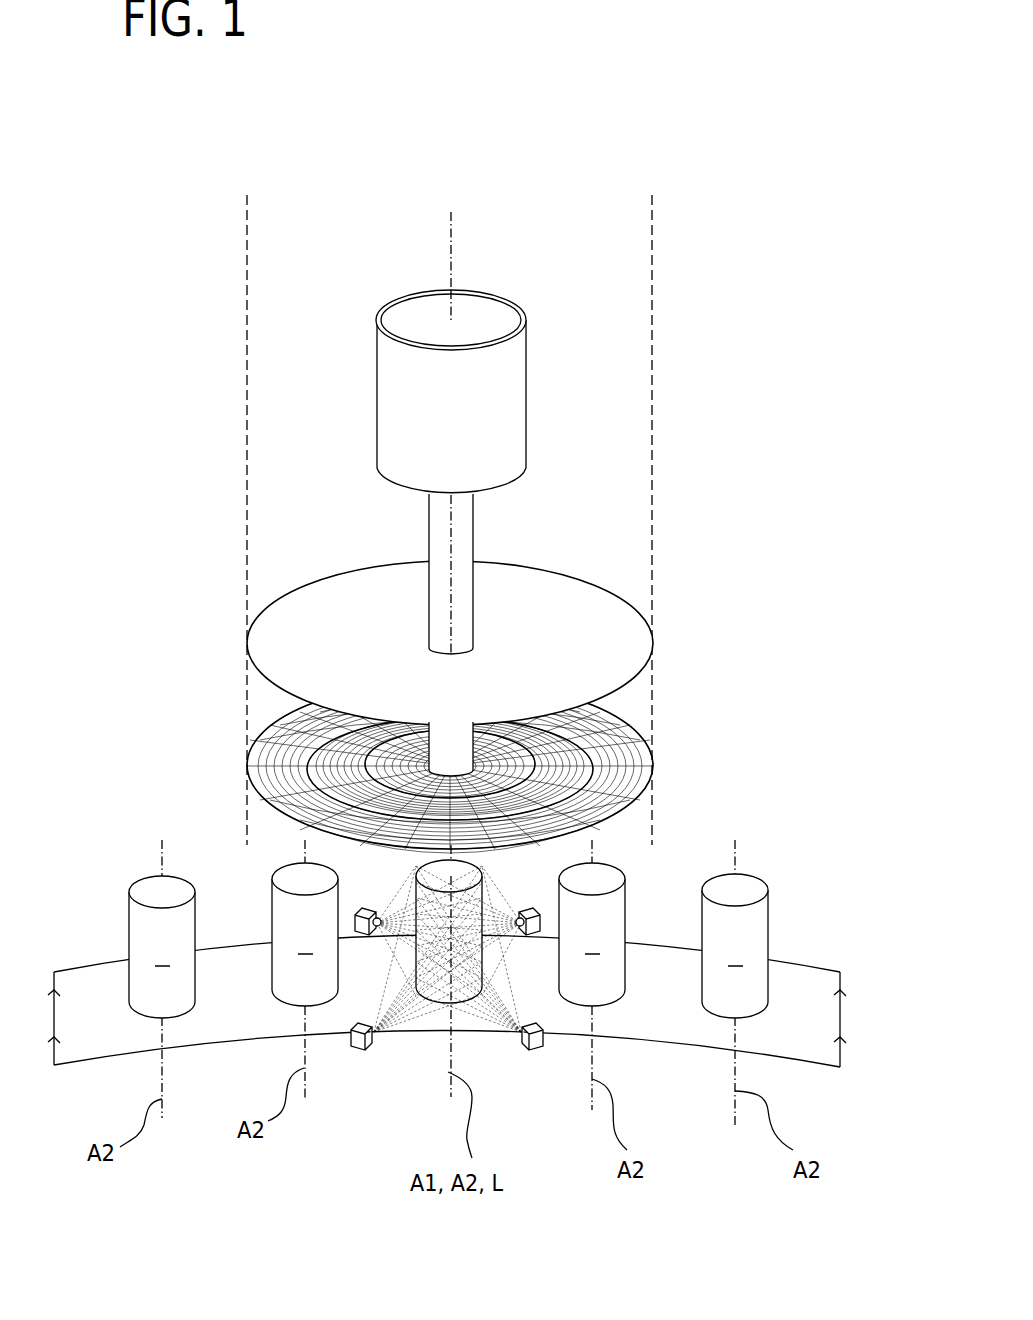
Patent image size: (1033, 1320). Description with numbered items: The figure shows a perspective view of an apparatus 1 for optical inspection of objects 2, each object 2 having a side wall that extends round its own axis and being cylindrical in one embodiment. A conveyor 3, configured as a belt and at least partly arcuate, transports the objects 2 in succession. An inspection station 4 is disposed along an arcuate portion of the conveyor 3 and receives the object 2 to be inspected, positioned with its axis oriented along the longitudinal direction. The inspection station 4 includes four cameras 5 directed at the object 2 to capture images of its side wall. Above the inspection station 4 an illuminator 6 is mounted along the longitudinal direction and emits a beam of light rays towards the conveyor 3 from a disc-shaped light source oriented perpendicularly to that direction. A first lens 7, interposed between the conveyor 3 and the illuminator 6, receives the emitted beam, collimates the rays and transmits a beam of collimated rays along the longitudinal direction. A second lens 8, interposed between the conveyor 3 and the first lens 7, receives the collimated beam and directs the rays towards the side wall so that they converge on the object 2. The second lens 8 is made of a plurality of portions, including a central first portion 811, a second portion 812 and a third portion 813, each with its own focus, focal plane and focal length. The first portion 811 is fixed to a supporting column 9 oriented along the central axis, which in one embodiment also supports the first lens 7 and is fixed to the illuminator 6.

The apparatus for optical inspection of objects 1 is at (740, 637).
The object 2 is at (437, 982).
The conveyor 3 is at (795, 994).
The inspection station 4 is at (489, 1055).
The camera 5 is at (366, 908).
The illuminator 6 is at (503, 388).
The first lens 7 is at (593, 618).
The second lens 8 is at (590, 756).
The first portion 811 is at (275, 782).
The second portion 812 is at (330, 764).
The third portion 813 is at (390, 762).
The supporting column 9 is at (458, 521).